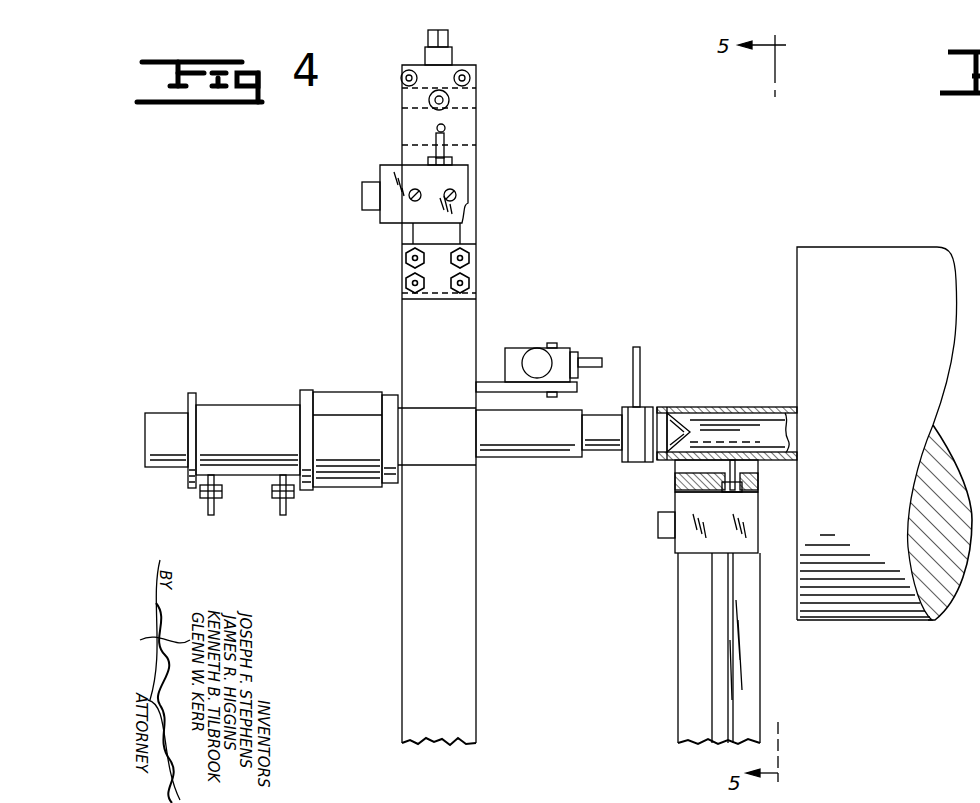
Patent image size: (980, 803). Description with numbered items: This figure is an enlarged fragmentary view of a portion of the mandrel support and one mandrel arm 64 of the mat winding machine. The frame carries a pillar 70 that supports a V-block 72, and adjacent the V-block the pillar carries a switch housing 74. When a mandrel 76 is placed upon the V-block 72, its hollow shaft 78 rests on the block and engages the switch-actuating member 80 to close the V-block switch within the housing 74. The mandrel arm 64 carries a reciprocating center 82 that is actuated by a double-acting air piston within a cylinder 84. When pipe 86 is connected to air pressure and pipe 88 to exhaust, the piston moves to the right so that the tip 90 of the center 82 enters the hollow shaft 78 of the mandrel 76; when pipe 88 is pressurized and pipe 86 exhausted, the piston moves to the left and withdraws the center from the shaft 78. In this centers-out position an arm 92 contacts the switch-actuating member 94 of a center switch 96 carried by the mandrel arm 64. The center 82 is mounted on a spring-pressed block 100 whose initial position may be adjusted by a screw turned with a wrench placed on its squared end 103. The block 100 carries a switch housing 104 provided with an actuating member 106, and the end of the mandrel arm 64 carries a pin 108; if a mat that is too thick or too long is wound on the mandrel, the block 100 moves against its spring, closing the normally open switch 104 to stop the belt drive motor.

The mandrel arm 64 is at (466, 666).
The pillar 70 is at (678, 690).
The V-block 72 is at (672, 470).
The switch housing 74 is at (676, 545).
The mandrel 76 is at (862, 247).
The mandrel shaft 78 is at (712, 407).
The switch-actuating member 80 is at (737, 465).
The reciprocating center 82 is at (600, 453).
The cylinder 84 is at (255, 405).
The pipe 86 is at (214, 512).
The pipe 88 is at (286, 512).
The center tip 90 is at (660, 402).
The arm 92 is at (641, 350).
The switch-actuating member 94 is at (594, 355).
The center switch 96 is at (517, 352).
The spring-pressed block 100 is at (449, 234).
The squared end 103 is at (449, 40).
The switch housing 104 is at (452, 181).
The actuating member 106 is at (447, 150).
The pin 108 is at (446, 127).